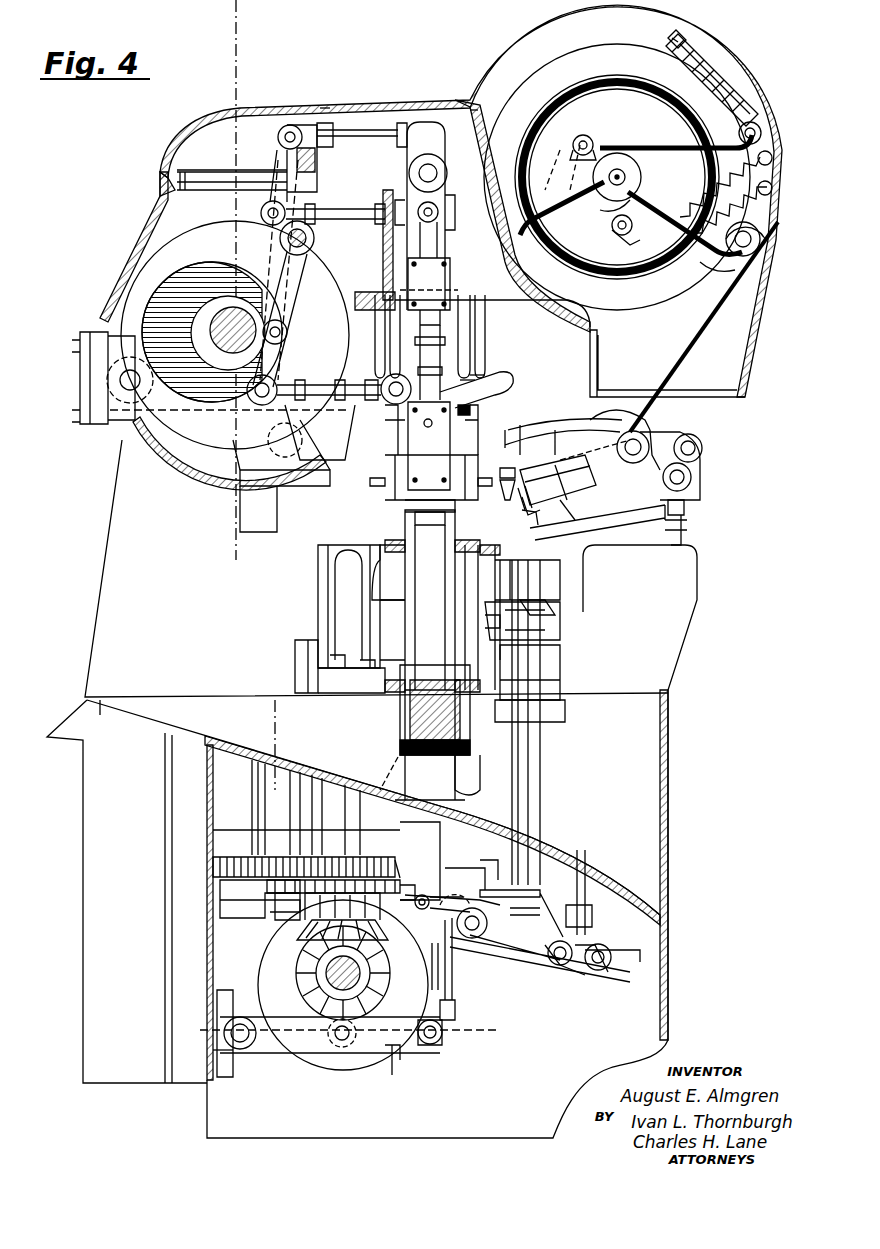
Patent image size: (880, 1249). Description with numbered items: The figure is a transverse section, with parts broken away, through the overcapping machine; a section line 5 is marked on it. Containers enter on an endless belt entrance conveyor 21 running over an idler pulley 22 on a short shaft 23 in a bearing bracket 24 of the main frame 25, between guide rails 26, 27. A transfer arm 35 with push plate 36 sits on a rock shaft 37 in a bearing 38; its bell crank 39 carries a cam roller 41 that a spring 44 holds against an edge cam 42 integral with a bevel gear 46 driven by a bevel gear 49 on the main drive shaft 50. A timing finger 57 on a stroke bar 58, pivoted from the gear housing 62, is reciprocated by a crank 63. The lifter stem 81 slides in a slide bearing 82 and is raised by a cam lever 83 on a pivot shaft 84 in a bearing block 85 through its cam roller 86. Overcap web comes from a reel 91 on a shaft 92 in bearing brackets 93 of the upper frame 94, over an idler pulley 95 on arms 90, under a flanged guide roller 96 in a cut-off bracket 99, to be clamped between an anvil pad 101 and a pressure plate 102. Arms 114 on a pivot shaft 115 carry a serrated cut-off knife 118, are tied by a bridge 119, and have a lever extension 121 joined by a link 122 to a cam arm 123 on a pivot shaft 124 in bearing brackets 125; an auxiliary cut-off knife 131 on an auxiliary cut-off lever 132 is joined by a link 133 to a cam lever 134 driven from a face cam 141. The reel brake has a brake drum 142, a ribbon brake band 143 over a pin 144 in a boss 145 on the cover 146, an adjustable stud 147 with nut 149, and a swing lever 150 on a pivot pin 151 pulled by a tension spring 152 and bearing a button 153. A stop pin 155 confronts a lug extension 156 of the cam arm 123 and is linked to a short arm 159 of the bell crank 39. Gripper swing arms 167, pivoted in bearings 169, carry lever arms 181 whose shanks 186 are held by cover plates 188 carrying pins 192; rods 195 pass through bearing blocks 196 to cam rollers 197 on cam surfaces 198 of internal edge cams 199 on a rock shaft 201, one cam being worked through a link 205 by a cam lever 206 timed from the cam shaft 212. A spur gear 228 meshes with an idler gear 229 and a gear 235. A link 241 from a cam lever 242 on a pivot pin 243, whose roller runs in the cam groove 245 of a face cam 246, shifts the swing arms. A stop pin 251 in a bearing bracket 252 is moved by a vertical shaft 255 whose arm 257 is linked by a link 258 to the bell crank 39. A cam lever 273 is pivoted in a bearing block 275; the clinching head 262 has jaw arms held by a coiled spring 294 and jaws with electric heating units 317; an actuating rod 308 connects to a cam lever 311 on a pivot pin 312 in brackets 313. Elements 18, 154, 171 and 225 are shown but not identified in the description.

The section line 5 is at (236, 18).
The gear housing 18 is at (306, 807).
The entrance conveyor 21 is at (478, 790).
The idler pulley 22 is at (470, 748).
The short shaft 23 is at (520, 719).
The bearing bracket 24 is at (397, 757).
The frame 25 is at (645, 775).
The guide rail 26 is at (487, 575).
The guide rail 27 is at (402, 545).
The transfer arm 35 is at (566, 634).
The push plate 36 is at (488, 575).
The vertical rock shaft 37 is at (522, 600).
The bearing 38 is at (540, 798).
The bell crank 39 is at (440, 892).
The cam roller 41 is at (428, 895).
The edge cam 42 is at (403, 870).
The spring 44 is at (432, 882).
The bevel gear 46 is at (381, 935).
The bevel gear 49 is at (390, 969).
The main drive shaft 50 is at (350, 978).
The timing finger 57 is at (398, 626).
The stroke bar 58 is at (340, 596).
The gear housing 62 is at (302, 648).
The crank 63 is at (337, 650).
The stem 81 is at (447, 975).
The slide bearing 82 is at (423, 823).
The cam lever 83 is at (428, 1046).
The pivot shaft 84 is at (246, 1042).
The bearing block 85 is at (222, 1075).
The cam roller 86 is at (352, 1047).
The arms 90 is at (724, 258).
The reel 91 is at (637, 100).
The shaft 92 is at (617, 165).
The bearing brackets 93 is at (562, 190).
The upper frame 94 is at (372, 106).
The idler pulley 95 is at (761, 239).
The flanged guide roller 96 is at (592, 420).
The cut-off bracket 99 is at (648, 507).
The anvil pad 101 is at (575, 477).
The pressure plate 102 is at (521, 497).
The arms 114 is at (548, 435).
The pivot shaft 115 is at (630, 438).
The cut-off knife 118 is at (504, 478).
The bridge 119 is at (655, 430).
The lever extension 121 is at (688, 438).
The link 122 is at (692, 474).
The cam arm 123 is at (535, 965).
The pivot shaft 124 is at (473, 940).
The bearing brackets 125 is at (480, 869).
The auxiliary cut-off knife 131 is at (514, 527).
The auxiliary cut-off lever 132 is at (580, 522).
The link 133 is at (690, 492).
The cam lever 134 is at (512, 950).
The face cam 141 is at (308, 1037).
The brake drum 142 is at (641, 172).
The ribbon brake band 143 is at (668, 146).
The pin 144 is at (757, 124).
The boss 145 is at (712, 66).
The cover 146 is at (680, 40).
The adjustable stud 147 is at (670, 40).
The nut 149 is at (702, 46).
The swing lever 150 is at (612, 222).
The pivot pin 151 is at (583, 136).
The tension spring 152 is at (770, 158).
The button 153 is at (650, 205).
The spring 154 is at (772, 188).
The stop pin 155 is at (630, 940).
The lug extension 156 is at (582, 972).
The short arm 159 is at (588, 926).
The swing arm 167 is at (452, 286).
The bearings 169 is at (412, 168).
The post 171 is at (426, 130).
The lever arm 181 is at (410, 497).
The shank 186 is at (490, 383).
The cover plate 188 is at (431, 451).
The pin 192 is at (476, 390).
The rods 195 is at (480, 375).
The bearing blocks 196 is at (429, 291).
The cam rollers 197 is at (440, 214).
The cam surfaces 198 is at (452, 197).
The internal edge cams 199 is at (450, 185).
The rock shaft 201 is at (472, 150).
The link 205 is at (355, 128).
The cam lever 206 is at (278, 170).
The cam shaft 212 is at (215, 333).
The cover 225 is at (232, 803).
The spur gear 228 is at (225, 866).
The idler gear 229 is at (285, 850).
The gear 235 is at (400, 862).
The link 241 is at (318, 400).
The cam lever 242 is at (293, 273).
The pivot pin 243 is at (315, 240).
The cam groove 245 is at (203, 290).
The face cam 246 is at (235, 335).
The stop pin 251 is at (284, 150).
The bearing bracket 252 is at (317, 160).
The vertical shaft 255 is at (237, 924).
The arm 257 is at (232, 900).
The link 258 is at (288, 922).
The clinching head 262 is at (354, 492).
The cam lever 273 is at (138, 442).
The bearing block 275 is at (128, 358).
The coiled spring 294 is at (472, 410).
The actuating rod 308 is at (356, 218).
The cam lever 311 is at (288, 332).
The pivot pin 312 is at (240, 465).
The brackets 313 is at (274, 442).
The electric heating units 317 is at (373, 478).